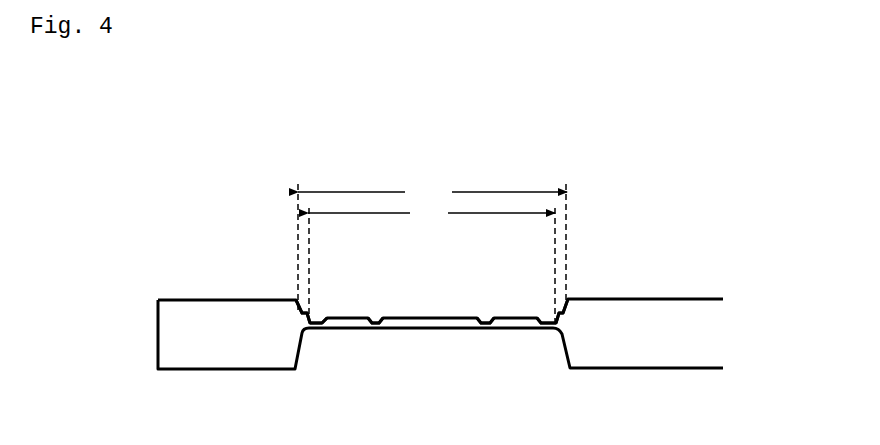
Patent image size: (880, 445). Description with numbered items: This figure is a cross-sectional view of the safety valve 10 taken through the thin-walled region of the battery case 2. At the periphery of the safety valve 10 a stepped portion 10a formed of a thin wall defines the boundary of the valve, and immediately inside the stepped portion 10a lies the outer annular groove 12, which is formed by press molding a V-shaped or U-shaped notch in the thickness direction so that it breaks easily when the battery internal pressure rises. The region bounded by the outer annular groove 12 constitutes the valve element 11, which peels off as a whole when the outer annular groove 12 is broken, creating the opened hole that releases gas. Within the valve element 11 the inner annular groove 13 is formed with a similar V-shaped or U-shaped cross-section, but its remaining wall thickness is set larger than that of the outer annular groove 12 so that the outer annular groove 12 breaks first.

The sensor element 2 is at (661, 250).
The safety valve 10 is at (432, 244).
The stepped portion 10a is at (306, 312).
The valve element 11 is at (431, 264).
The outer annular groove 12 is at (323, 322).
The inner annular groove 13 is at (378, 322).